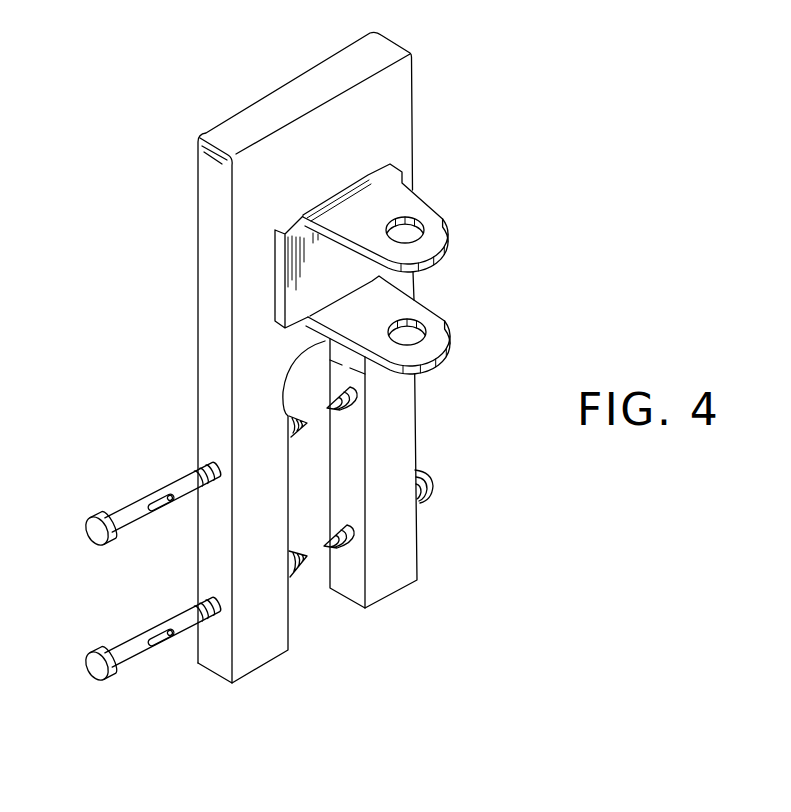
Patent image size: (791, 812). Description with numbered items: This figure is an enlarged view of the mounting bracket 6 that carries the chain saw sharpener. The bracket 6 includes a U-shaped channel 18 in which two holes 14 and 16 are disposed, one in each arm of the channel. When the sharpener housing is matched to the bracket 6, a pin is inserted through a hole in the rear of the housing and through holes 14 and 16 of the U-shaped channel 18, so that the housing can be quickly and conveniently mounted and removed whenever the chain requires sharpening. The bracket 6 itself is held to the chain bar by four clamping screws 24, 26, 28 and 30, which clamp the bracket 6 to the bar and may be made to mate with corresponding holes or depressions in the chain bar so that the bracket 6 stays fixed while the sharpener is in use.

The bracket 6 is at (437, 55).
The hole 14 is at (425, 229).
The hole 16 is at (424, 332).
The U-shaped channel 18 is at (387, 205).
The clamping screw 24 is at (91, 527).
The clamping screw 26 is at (91, 660).
The clamping screw 28 is at (344, 419).
The clamping screw 30 is at (430, 487).